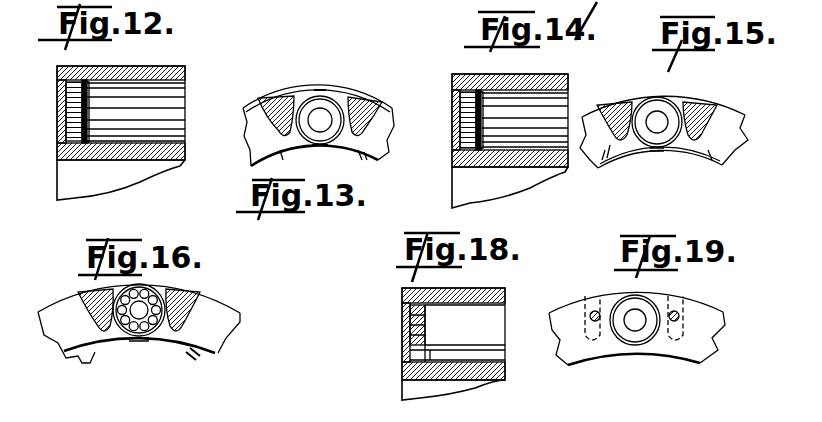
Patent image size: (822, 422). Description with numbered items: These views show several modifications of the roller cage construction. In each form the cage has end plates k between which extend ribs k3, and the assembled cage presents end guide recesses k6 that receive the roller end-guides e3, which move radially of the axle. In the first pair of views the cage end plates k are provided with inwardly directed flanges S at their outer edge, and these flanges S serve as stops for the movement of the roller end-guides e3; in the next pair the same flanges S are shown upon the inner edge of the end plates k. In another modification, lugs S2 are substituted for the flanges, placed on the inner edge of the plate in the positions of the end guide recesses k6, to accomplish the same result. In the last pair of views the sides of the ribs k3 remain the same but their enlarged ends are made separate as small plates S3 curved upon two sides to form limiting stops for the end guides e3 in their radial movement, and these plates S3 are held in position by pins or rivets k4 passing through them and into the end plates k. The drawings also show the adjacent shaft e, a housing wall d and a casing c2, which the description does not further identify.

In FIG. 12, the inwardly directed flange S is at (84, 82).
In FIG. 13, the inwardly directed flange S is at (312, 94).
In FIG. 14, the inwardly directed flange S is at (460, 151).
In FIG. 15, the inwardly directed flange S is at (647, 157).
In FIG. 12, the housing wall d is at (142, 68).
In FIG. 14, the housing wall d is at (527, 76).
In FIG. 18, the housing wall d is at (480, 290).
In FIG. 12, the end plate k is at (59, 129).
In FIG. 13, the end plate k is at (252, 141).
In FIG. 14, the end plate k is at (454, 125).
In FIG. 15, the end plate k is at (728, 150).
In FIG. 16, the end plate k is at (48, 341).
In FIG. 18, the end plate k is at (404, 351).
In FIG. 19, the end plate k is at (722, 331).
In FIG. 12, the roller end-guide e3 is at (78, 108).
In FIG. 13, the roller end-guide e3 is at (330, 106).
In FIG. 14, the roller end-guide e3 is at (474, 115).
In FIG. 15, the roller end-guide e3 is at (659, 116).
In FIG. 16, the roller end-guide e3 is at (143, 292).
In FIG. 19, the roller end-guide e3 is at (635, 346).
In FIG. 12, the shaft e is at (136, 112).
In FIG. 14, the shaft e is at (525, 120).
In FIG. 12, the casing c2 is at (108, 161).
In FIG. 14, the casing c2 is at (502, 168).
In FIG. 18, the casing c2 is at (440, 383).
In FIG. 13, the rib k3 is at (278, 101).
In FIG. 15, the rib k3 is at (624, 105).
In FIG. 16, the rib k3 is at (84, 296).
In FIG. 18, the rib k3 is at (457, 339).
In FIG. 13, the end guide recess k6 is at (391, 142).
In FIG. 15, the end guide recess k6 is at (738, 131).
In FIG. 16, the end guide recess k6 is at (140, 328).
In FIG. 16, the lug S2 is at (96, 359).
In FIG. 18, the pin or rivet k4 is at (408, 331).
In FIG. 19, the pin or rivet k4 is at (592, 312).
In FIG. 18, the small plate S3 is at (426, 321).
In FIG. 19, the small plate S3 is at (584, 321).